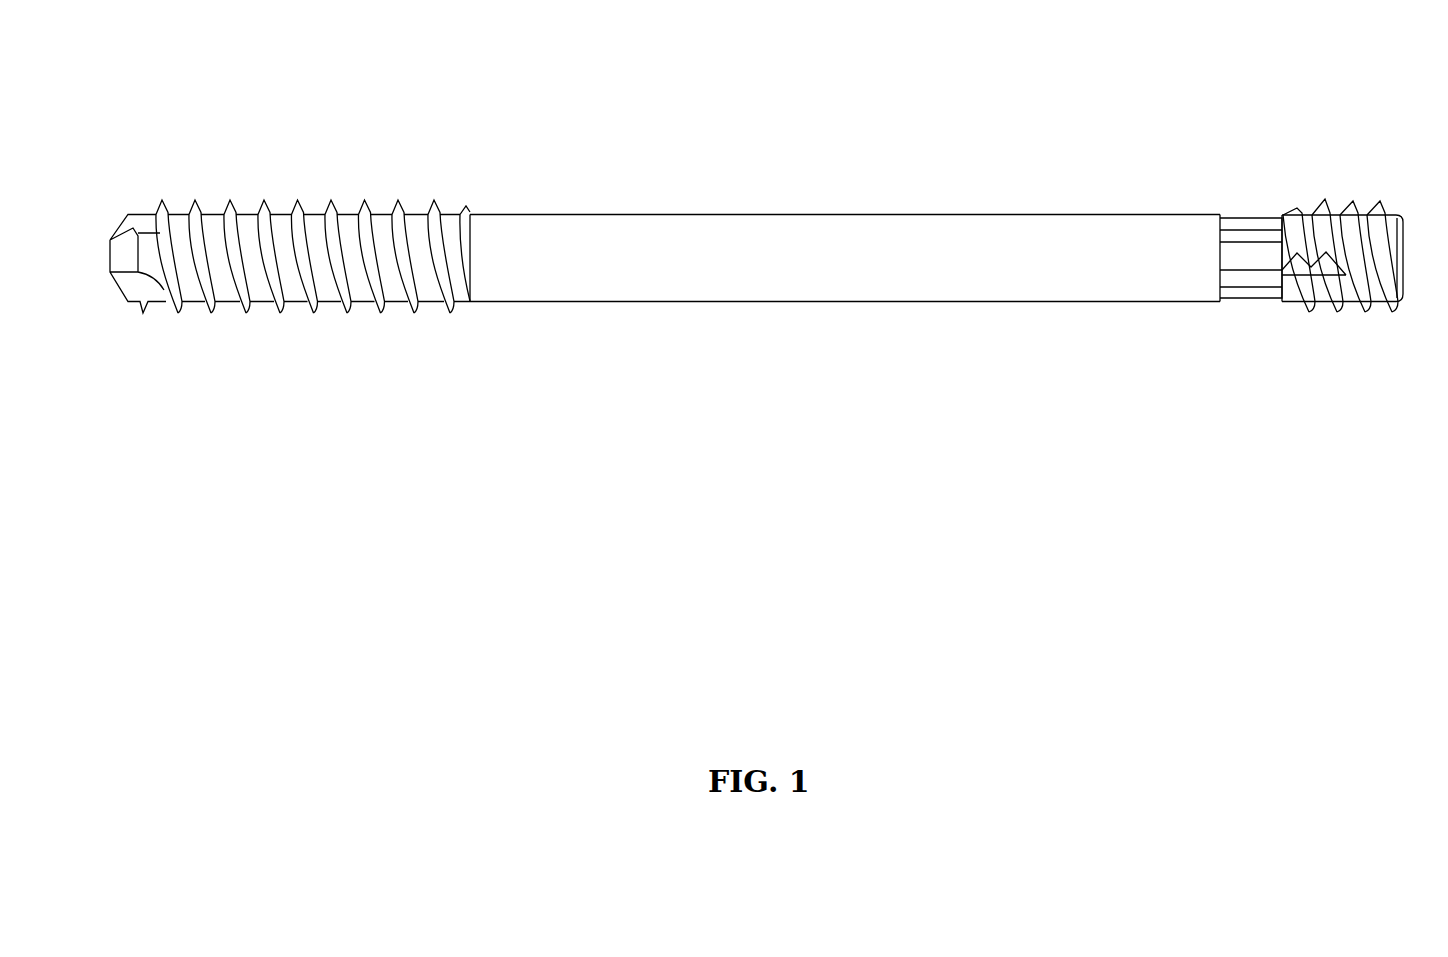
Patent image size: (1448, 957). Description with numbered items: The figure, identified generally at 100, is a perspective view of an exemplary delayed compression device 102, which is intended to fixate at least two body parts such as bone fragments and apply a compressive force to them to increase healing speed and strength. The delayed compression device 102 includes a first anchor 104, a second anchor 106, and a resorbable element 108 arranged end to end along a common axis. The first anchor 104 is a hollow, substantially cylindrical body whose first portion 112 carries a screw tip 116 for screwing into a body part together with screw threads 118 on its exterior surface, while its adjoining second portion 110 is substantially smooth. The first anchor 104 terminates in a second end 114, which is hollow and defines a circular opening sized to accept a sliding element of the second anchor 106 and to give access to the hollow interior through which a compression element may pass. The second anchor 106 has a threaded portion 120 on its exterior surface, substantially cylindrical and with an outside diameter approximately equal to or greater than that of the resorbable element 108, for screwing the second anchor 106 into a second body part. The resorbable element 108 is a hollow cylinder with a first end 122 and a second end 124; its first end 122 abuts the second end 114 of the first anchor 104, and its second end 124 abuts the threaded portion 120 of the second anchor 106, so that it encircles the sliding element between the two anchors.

The bone screw 100 is at (1187, 70).
The delayed compression device 102 is at (612, 129).
The first anchor 104 is at (464, 207).
The second anchor 106 is at (1325, 210).
The resorbable element 108 is at (1253, 217).
The second portion 110 is at (770, 233).
The first portion 112 is at (292, 210).
The second end 114 is at (888, 302).
The screw tip 116 is at (110, 255).
The screw threads 118 is at (329, 318).
The threaded portion 120 is at (1390, 305).
The first end 122 is at (1230, 300).
The second end 124 is at (1267, 300).